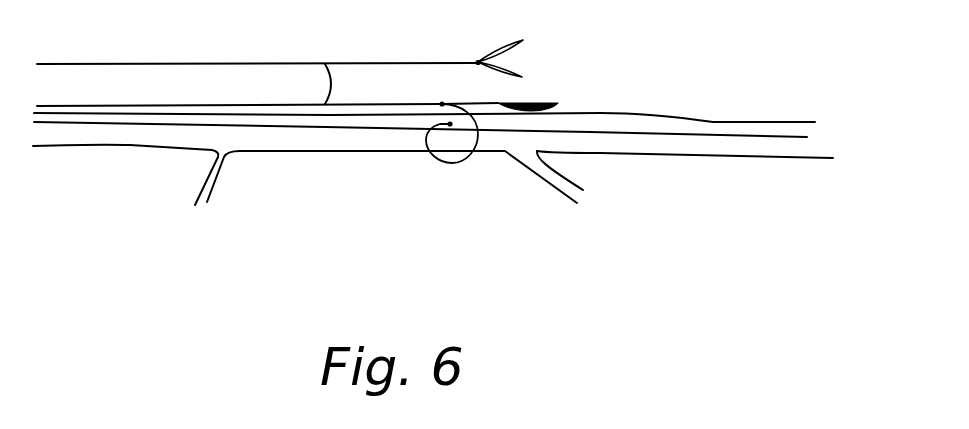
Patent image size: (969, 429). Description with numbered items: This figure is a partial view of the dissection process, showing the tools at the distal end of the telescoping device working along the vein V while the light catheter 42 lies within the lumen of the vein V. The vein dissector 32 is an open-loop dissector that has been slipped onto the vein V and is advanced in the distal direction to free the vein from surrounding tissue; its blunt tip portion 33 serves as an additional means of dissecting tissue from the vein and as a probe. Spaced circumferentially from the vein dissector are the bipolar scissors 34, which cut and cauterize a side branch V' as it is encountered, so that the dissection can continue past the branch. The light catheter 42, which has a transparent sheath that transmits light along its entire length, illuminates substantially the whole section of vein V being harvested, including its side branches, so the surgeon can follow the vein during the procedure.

The vein dissector 32 is at (450, 173).
The blunt tip portion 33 is at (558, 102).
The bipolar scissors 34 is at (521, 68).
The light catheter 42 is at (807, 137).
The vein V is at (433, 178).
The side branch V' is at (554, 208).